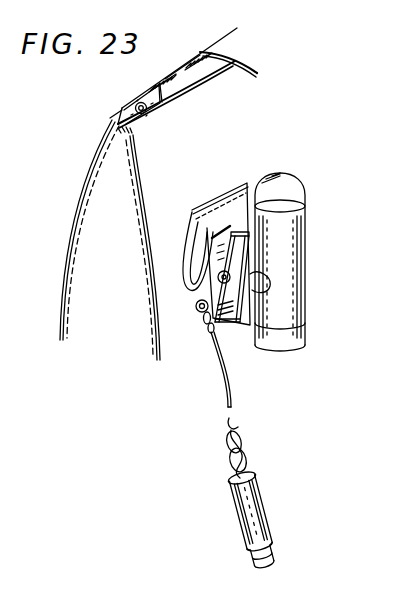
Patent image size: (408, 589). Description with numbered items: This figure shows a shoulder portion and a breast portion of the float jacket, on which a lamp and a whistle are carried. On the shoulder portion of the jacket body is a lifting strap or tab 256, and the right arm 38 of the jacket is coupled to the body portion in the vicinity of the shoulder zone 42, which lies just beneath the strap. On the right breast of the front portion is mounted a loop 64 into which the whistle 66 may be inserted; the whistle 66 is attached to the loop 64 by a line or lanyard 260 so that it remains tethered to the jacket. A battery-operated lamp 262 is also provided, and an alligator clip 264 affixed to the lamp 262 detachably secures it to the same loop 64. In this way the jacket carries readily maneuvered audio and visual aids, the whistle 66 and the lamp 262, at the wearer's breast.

The lifting strap 256 is at (203, 43).
The right arm 38 is at (72, 196).
The shoulder zone 42 is at (112, 119).
The loop 64 is at (203, 208).
The alligator clip 264 is at (240, 324).
The lamp 262 is at (305, 225).
The lanyard 260 is at (226, 393).
The whistle 66 is at (232, 517).